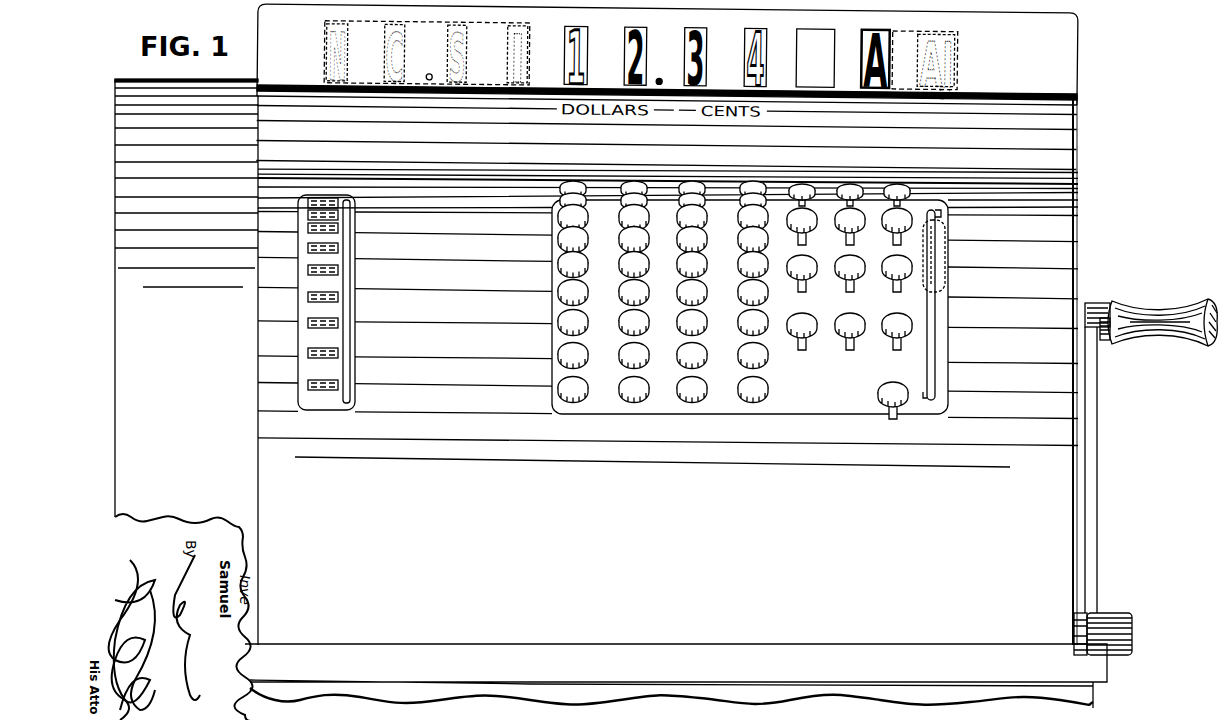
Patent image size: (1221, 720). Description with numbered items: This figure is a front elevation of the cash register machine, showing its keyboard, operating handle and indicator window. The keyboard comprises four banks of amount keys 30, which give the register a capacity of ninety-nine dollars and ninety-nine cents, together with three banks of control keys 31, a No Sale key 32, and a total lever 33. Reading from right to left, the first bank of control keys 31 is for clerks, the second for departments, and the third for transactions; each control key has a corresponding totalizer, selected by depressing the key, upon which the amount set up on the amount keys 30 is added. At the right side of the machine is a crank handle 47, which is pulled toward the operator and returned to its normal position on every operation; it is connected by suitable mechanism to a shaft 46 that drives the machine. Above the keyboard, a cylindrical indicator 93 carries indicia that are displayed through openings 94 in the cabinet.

The amount keys 30 is at (578, 400).
The control keys 31 is at (800, 340).
The No Sale key 32 is at (877, 390).
The total lever 33 is at (940, 254).
The shaft 46 is at (1074, 625).
The crank handle 47 is at (1097, 474).
The cylindrical indicator 93 is at (820, 38).
The openings 94 is at (832, 40).